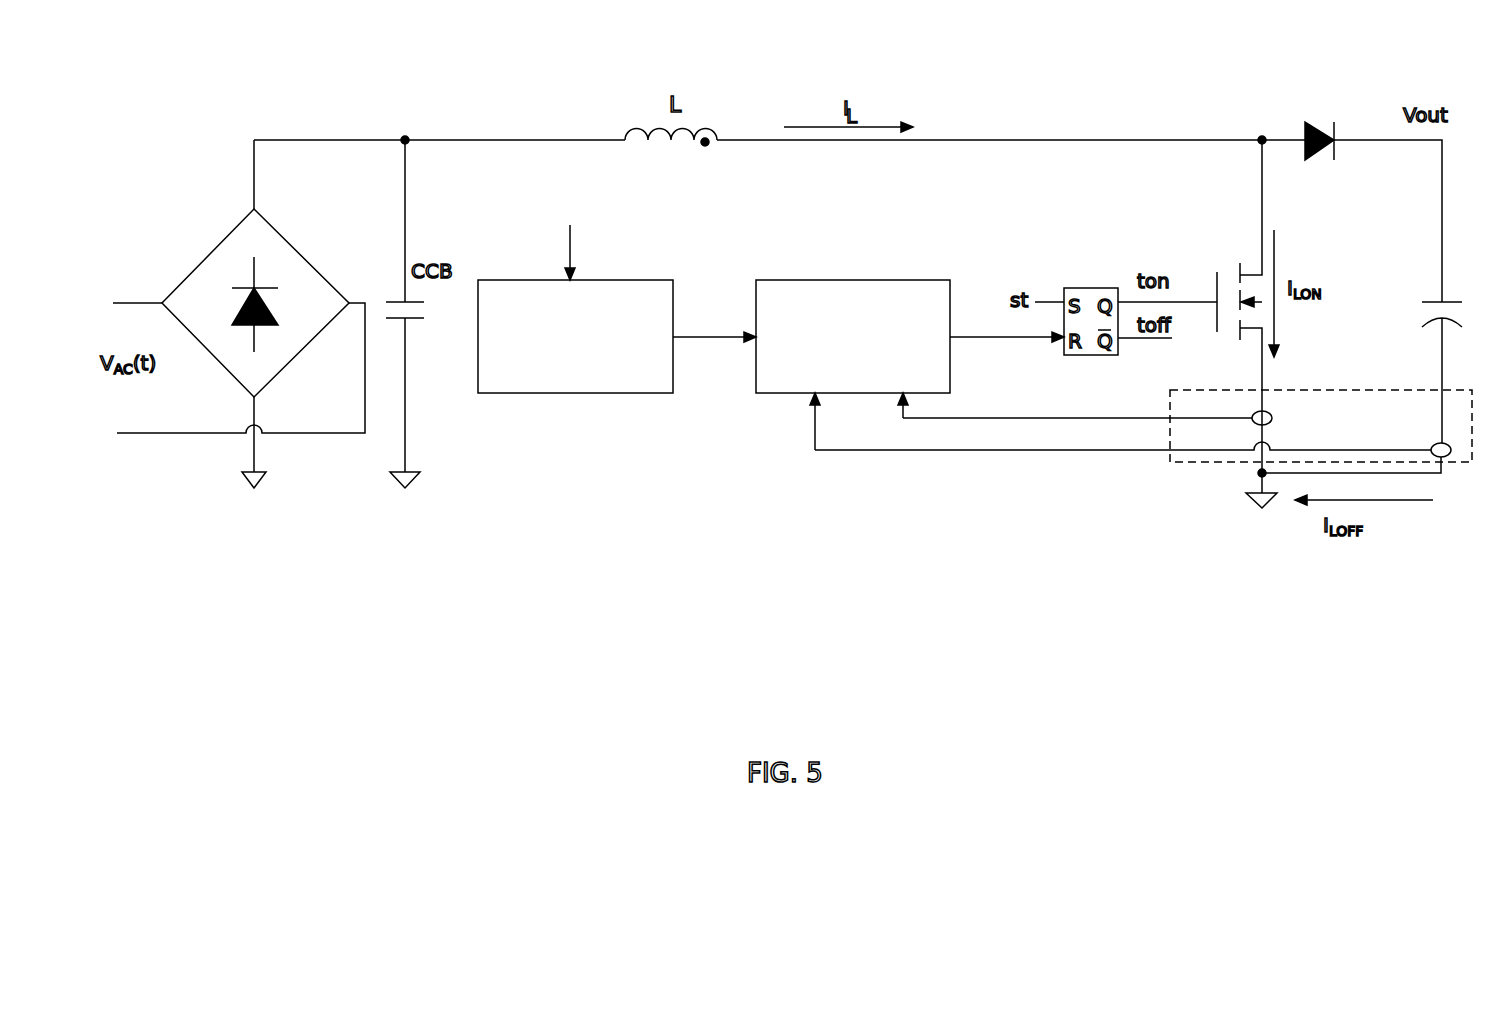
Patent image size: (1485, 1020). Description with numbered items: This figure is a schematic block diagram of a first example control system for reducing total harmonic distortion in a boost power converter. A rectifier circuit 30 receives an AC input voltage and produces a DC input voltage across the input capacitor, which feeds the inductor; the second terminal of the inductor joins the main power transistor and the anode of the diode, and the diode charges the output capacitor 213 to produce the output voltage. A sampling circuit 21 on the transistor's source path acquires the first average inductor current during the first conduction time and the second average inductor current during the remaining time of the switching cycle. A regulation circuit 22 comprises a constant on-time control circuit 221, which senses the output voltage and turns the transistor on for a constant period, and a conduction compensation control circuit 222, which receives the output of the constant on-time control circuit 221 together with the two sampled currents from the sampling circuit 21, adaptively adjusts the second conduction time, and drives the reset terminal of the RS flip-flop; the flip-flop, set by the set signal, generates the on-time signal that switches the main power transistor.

The rectifier circuit 30 is at (212, 249).
The capacitor 213 is at (1418, 370).
The sampling circuit 21 is at (1223, 462).
The regulation circuit 22 is at (535, 545).
The constant on-time control circuit 221 is at (618, 393).
The conduction compensation control circuit 222 is at (756, 393).